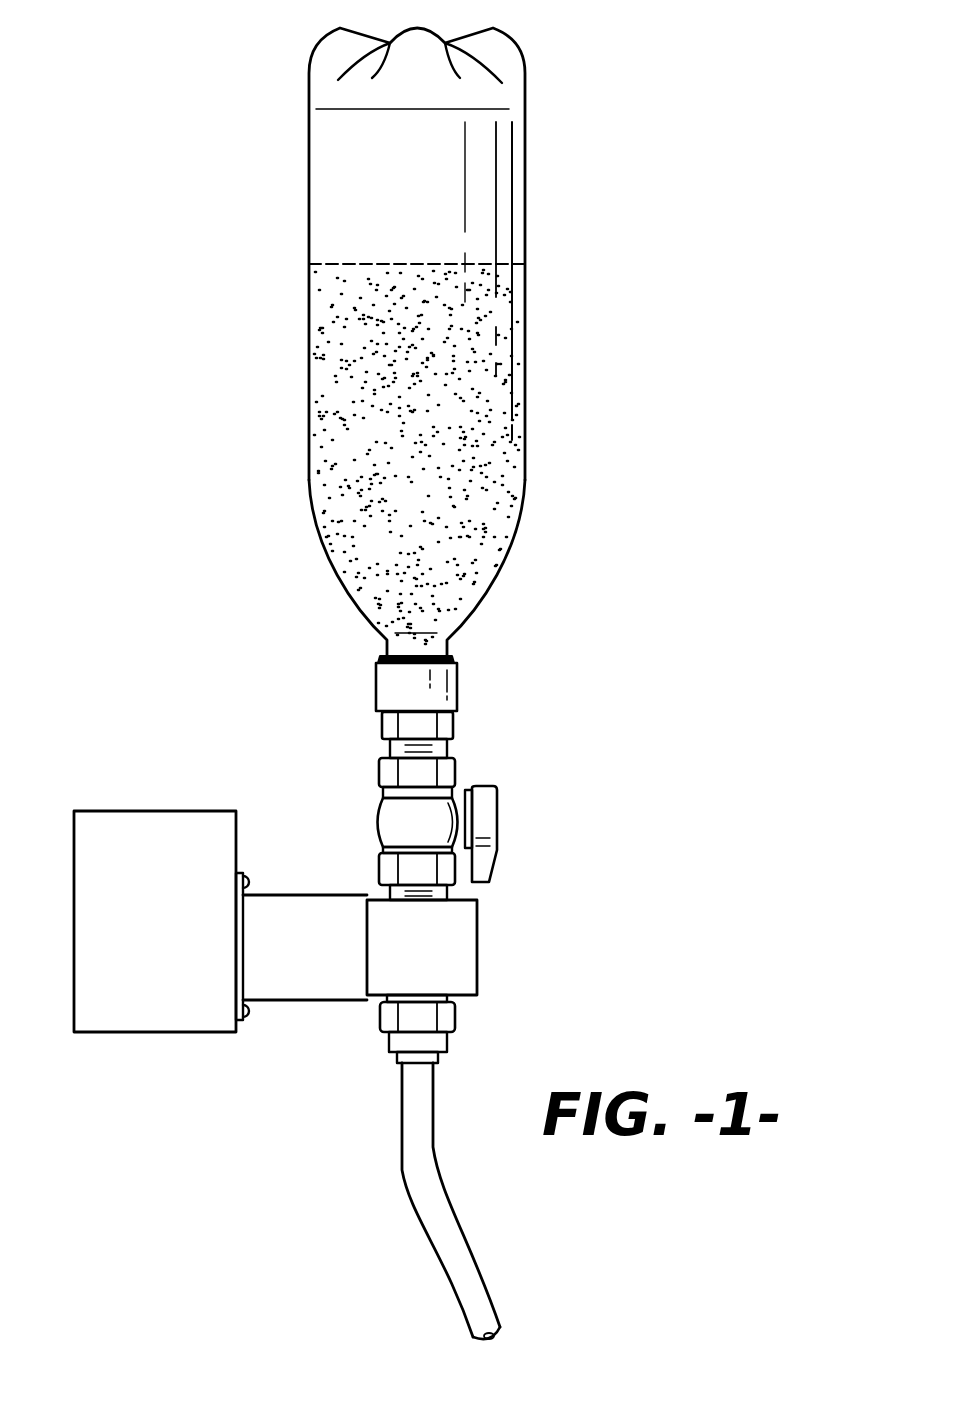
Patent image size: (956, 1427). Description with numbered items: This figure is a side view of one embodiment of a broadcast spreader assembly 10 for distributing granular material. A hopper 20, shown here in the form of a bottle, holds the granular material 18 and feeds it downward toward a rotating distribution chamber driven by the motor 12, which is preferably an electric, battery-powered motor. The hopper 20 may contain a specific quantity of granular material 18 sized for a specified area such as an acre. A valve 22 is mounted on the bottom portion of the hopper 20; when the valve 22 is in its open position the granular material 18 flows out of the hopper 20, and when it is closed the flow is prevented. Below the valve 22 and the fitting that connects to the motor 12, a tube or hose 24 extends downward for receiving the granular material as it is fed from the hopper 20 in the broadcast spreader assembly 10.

The broadcast spreader assembly 10 is at (579, 811).
The motor 12 is at (160, 810).
The granular material 18 is at (475, 492).
The hopper 20 is at (525, 202).
The valve 22 is at (498, 812).
The dispensing tube 24 is at (417, 1177).